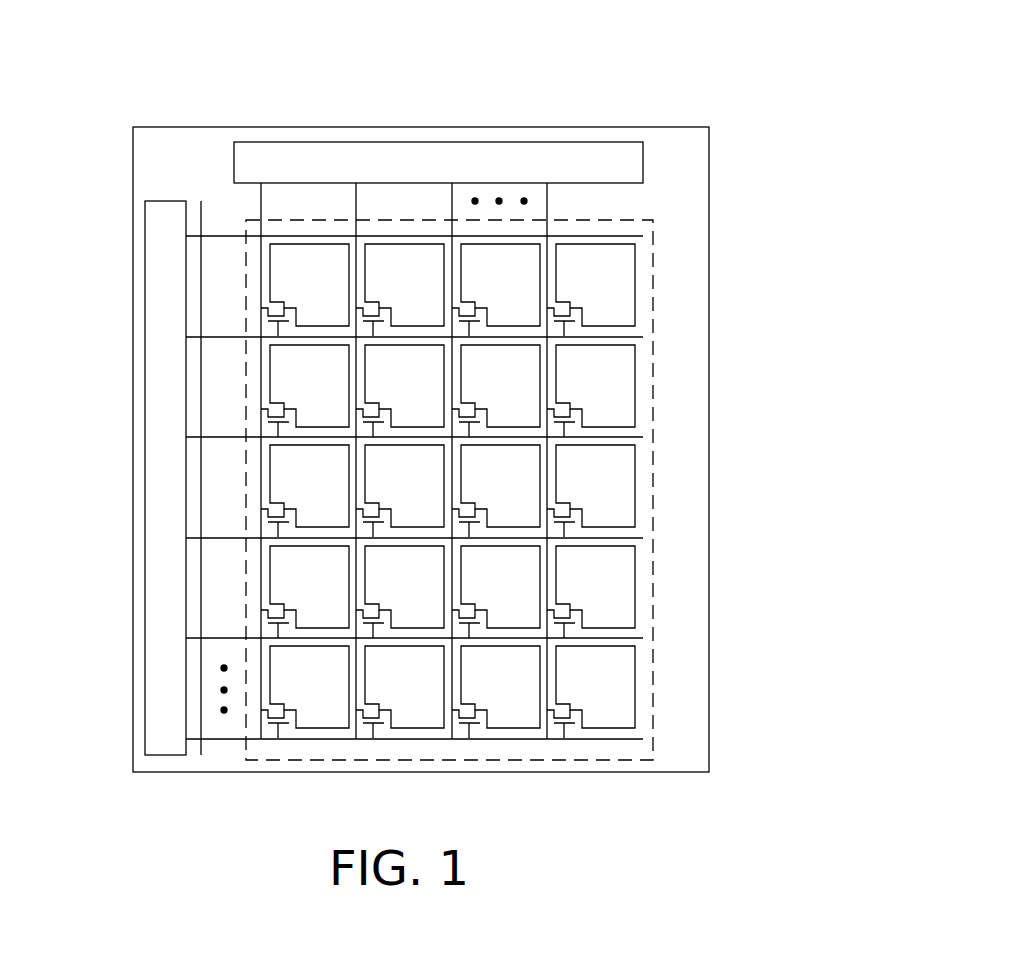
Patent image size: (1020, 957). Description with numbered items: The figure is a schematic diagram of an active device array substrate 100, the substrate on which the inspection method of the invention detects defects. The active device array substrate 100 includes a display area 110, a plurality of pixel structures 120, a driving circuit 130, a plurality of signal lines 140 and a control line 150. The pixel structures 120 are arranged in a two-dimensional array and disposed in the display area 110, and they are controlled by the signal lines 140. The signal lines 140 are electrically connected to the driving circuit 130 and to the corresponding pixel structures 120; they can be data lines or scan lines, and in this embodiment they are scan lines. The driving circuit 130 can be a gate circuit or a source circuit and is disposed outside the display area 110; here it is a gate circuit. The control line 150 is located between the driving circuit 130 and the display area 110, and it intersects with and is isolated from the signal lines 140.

The active device array substrate 100 is at (712, 90).
The display area 110 is at (623, 228).
The pixel structures 120 is at (660, 401).
The driving circuit 130 is at (167, 343).
The signal lines 140 is at (222, 637).
The control line 150 is at (202, 490).